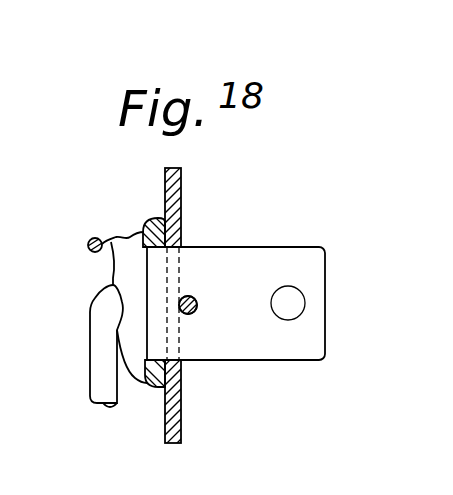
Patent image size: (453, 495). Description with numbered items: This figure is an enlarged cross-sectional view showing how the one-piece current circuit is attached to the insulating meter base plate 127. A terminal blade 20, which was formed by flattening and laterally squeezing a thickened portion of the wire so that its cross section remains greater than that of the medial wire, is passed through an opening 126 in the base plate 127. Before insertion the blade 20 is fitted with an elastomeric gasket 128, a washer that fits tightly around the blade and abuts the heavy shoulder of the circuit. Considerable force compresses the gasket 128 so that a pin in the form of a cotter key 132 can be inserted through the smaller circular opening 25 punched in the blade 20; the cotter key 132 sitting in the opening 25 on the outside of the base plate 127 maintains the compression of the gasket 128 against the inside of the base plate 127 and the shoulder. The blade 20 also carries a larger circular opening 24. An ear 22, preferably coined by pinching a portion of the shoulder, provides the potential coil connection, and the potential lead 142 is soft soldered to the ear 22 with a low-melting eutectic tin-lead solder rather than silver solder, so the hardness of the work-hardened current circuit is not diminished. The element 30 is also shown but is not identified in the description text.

The terminal blade 20 is at (283, 260).
The ear 22 is at (118, 240).
The larger circular opening 24 is at (288, 320).
The smaller circular opening 25 is at (192, 297).
The lever 30 is at (90, 378).
The opening 126 is at (180, 378).
The base plate 127 is at (173, 418).
The elastomeric gasket 128 is at (153, 218).
The cotter key 132 is at (197, 300).
The potential lead 142 is at (89, 242).